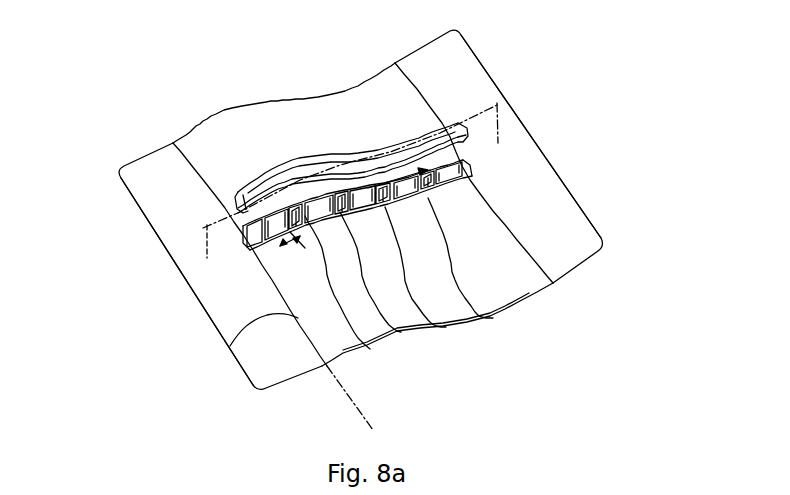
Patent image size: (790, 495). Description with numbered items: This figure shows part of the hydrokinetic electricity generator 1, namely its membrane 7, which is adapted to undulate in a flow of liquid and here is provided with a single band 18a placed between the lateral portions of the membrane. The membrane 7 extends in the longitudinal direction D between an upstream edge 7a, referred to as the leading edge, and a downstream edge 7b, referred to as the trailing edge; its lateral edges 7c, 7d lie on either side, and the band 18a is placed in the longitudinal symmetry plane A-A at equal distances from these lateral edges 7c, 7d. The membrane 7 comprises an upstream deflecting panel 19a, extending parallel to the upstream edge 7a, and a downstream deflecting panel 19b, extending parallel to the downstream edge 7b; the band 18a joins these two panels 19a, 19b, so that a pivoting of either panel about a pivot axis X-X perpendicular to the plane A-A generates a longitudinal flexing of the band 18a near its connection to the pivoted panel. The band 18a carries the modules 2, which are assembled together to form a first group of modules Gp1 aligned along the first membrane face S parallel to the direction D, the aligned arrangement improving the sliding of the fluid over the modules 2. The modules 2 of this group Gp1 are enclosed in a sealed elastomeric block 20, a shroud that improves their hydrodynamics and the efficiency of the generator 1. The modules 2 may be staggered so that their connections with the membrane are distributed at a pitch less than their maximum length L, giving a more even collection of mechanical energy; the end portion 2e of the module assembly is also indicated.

The electricity generator 1 is at (127, 128).
The membrane 7 is at (378, 84).
The upstream edge 7a is at (230, 346).
The downstream edge 7b is at (417, 90).
The lateral edge 7c is at (203, 122).
The lateral edge 7d is at (345, 355).
The upstream deflecting panel 19a is at (142, 205).
The downstream deflecting panel 19b is at (508, 122).
The sealed elastomeric block 20 is at (276, 173).
The band 18a is at (472, 176).
The end of sensor element 2e is at (478, 180).
The module 2 is at (369, 347).
The longitudinal direction D is at (392, 176).
The first membrane face S is at (528, 277).
The maximum length L is at (290, 237).
The first group of modules Gp1 is at (222, 257).
The longitudinal symmetry plane A-A is at (235, 225).
The pivot axis X-X is at (357, 413).